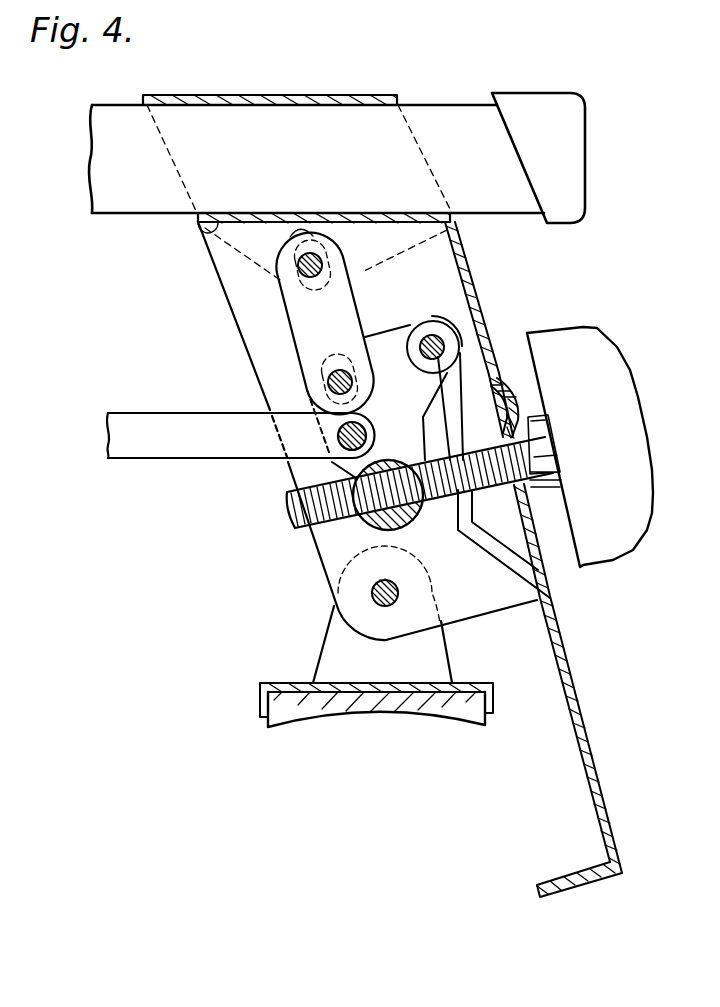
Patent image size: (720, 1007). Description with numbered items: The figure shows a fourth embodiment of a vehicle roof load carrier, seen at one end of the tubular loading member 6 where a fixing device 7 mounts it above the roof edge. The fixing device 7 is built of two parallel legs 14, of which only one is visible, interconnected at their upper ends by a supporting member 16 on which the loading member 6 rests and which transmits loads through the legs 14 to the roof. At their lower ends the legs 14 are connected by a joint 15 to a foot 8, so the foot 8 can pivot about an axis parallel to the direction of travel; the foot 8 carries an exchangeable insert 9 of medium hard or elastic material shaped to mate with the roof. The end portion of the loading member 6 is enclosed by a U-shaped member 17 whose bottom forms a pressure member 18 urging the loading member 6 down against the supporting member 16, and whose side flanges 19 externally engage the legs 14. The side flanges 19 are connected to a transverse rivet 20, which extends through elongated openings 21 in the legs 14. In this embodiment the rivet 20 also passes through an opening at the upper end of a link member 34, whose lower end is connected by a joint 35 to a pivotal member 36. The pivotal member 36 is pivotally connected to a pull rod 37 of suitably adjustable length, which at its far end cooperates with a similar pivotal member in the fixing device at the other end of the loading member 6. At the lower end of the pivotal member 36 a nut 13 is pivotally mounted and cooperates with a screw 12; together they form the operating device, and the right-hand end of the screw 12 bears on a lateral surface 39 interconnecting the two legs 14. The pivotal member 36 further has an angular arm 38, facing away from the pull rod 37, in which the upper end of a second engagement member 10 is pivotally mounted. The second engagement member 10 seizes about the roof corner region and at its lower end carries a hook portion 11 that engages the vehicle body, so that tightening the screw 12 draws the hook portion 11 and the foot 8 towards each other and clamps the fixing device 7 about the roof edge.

The loading member 6 is at (435, 105).
The fixing device 7 is at (606, 264).
The foot 8 is at (260, 706).
The exchangeable insert 9 is at (295, 714).
The second engagement member 10 is at (572, 700).
The hook portion 11 is at (546, 884).
The screw 12 is at (287, 500).
The nut 13 is at (362, 527).
The legs 14 is at (435, 268).
The joint 15 is at (373, 592).
The supporting member 16 is at (212, 231).
The U-shaped member 17 is at (172, 113).
The pressure member 18 is at (258, 95).
The side flanges 19 is at (245, 245).
The transverse rivet 20 is at (312, 258).
The elongated openings 21 is at (298, 236).
The link member 34 is at (300, 300).
The joint 35 is at (330, 381).
The pivotal member 36 is at (393, 333).
The pull rod 37 is at (172, 393).
The angular arm 38 is at (462, 372).
The lateral surface 39 is at (553, 521).